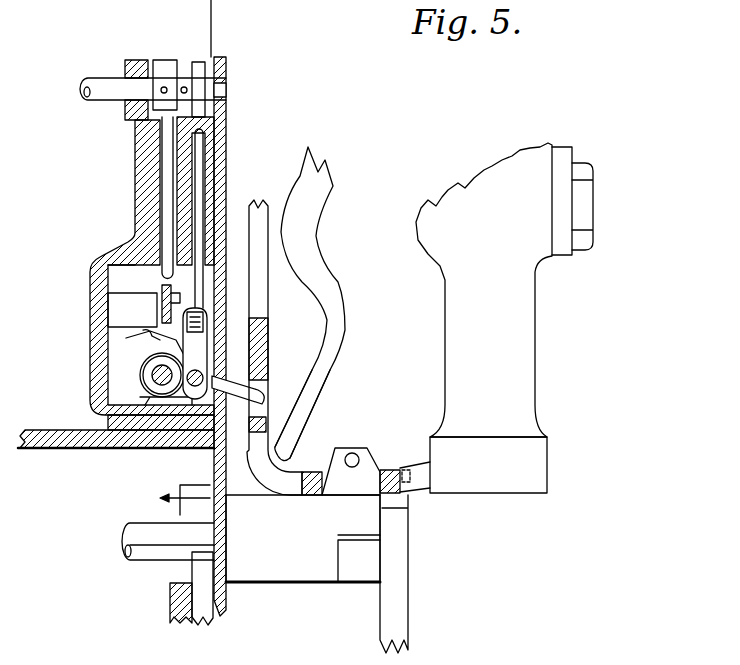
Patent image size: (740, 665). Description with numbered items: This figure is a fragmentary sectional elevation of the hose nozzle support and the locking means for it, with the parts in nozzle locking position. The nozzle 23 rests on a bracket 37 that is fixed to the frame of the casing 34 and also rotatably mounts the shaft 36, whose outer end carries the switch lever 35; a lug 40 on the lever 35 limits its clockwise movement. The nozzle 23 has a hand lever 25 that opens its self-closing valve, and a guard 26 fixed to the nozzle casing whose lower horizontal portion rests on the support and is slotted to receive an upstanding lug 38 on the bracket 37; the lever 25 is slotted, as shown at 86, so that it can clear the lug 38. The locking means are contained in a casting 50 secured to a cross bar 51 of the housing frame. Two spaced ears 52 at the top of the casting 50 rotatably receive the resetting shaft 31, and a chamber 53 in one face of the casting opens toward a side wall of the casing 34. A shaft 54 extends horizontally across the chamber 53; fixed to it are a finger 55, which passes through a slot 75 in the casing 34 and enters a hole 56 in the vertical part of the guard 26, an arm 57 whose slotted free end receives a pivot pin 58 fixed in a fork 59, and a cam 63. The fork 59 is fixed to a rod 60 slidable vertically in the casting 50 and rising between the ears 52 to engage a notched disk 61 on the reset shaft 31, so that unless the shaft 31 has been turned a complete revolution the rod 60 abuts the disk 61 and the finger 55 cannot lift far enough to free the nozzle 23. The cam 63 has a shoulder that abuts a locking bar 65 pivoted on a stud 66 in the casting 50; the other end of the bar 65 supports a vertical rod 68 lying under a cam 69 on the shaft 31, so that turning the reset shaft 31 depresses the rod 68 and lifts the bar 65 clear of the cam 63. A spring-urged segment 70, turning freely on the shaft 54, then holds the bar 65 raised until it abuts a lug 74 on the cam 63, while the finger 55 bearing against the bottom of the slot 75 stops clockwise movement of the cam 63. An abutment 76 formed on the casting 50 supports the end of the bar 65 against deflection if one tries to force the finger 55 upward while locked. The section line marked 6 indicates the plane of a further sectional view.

The section line 6 is at (180, 504).
The nozzle 23 is at (504, 318).
The hand lever 25 is at (345, 297).
The guard 26 is at (268, 297).
The resetting shaft 31 is at (108, 93).
The casing 34 is at (228, 70).
The lever 35 is at (408, 601).
The shaft 36 is at (150, 547).
The bracket 37 is at (303, 538).
The lug 38 is at (366, 473).
The lug 40 is at (353, 570).
The casting 50 is at (137, 215).
The cross bar 51 is at (61, 449).
The ears 52 is at (138, 60).
The chamber 53 is at (110, 440).
The shaft 54 is at (150, 446).
The finger 55 is at (268, 372).
The hole 56 is at (266, 404).
The arm 57 is at (174, 448).
The pivot pin 58 is at (233, 396).
The fork 59 is at (132, 345).
The rod 60 is at (206, 152).
The disk 61 is at (227, 103).
The cam 63 is at (110, 342).
The locking bar 65 is at (120, 297).
The stud 66 is at (162, 292).
The vertical rod 68 is at (162, 132).
The cam 69 is at (165, 60).
The segment 70 is at (154, 336).
The lug 74 is at (190, 345).
The slot 75 is at (232, 336).
The abutment 76 is at (108, 288).
The slot 86 is at (295, 421).